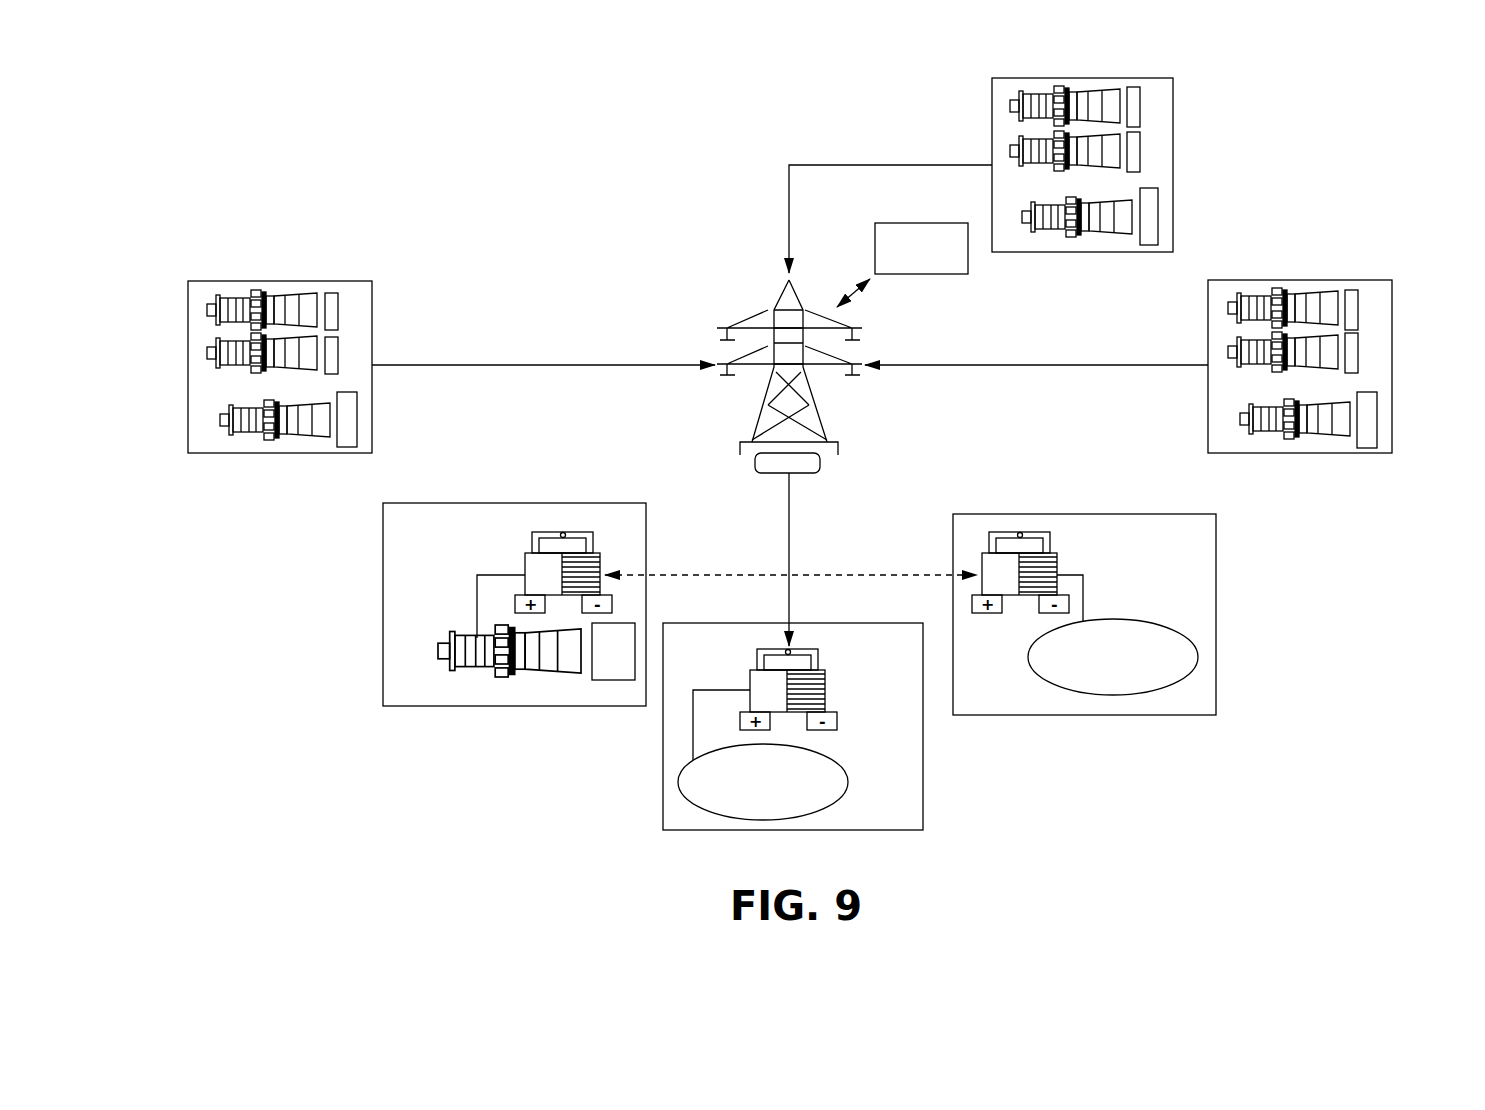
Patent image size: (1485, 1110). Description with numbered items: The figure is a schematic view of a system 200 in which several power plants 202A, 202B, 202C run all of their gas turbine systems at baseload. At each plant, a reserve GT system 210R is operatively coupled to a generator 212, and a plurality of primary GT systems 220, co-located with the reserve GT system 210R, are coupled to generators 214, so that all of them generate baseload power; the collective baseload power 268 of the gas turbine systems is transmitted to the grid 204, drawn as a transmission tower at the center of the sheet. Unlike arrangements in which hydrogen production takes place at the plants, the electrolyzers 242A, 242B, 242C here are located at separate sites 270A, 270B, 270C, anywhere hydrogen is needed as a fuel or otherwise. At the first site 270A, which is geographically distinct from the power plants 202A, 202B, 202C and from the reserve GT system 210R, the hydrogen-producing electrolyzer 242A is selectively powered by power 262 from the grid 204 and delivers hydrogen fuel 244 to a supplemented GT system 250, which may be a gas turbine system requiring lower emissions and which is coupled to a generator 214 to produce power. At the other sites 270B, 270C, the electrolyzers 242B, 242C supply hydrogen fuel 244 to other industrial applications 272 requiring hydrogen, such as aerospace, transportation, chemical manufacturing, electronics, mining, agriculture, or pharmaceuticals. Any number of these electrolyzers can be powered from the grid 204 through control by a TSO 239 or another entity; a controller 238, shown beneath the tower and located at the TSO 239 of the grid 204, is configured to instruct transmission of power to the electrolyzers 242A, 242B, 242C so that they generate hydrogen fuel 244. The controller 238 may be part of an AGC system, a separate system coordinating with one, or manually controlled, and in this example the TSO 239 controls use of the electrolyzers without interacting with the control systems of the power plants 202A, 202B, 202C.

The system 200 is at (521, 160).
The power plant 202A is at (1104, 70).
The power plant 202B is at (336, 275).
The power plant 202C is at (1320, 276).
The grid 204 is at (743, 303).
The reserve GT system 210R is at (220, 420).
The generator 212 is at (350, 410).
The generator 214 is at (333, 297).
The primary GT system 220 is at (207, 357).
The controller 238 is at (820, 463).
The TSO 239 is at (875, 250).
The electrolyzer 242A is at (557, 557).
The electrolyzer 242B is at (815, 687).
The electrolyzer 242C is at (1020, 553).
The hydrogen fuel 244 is at (477, 583).
The supplemented GT system 250 is at (520, 670).
The power 262 is at (718, 575).
The collective baseload power 268 is at (528, 365).
The site 270A is at (377, 609).
The site 270B is at (930, 766).
The site 270C is at (1222, 612).
The industrial applications 272 is at (700, 798).